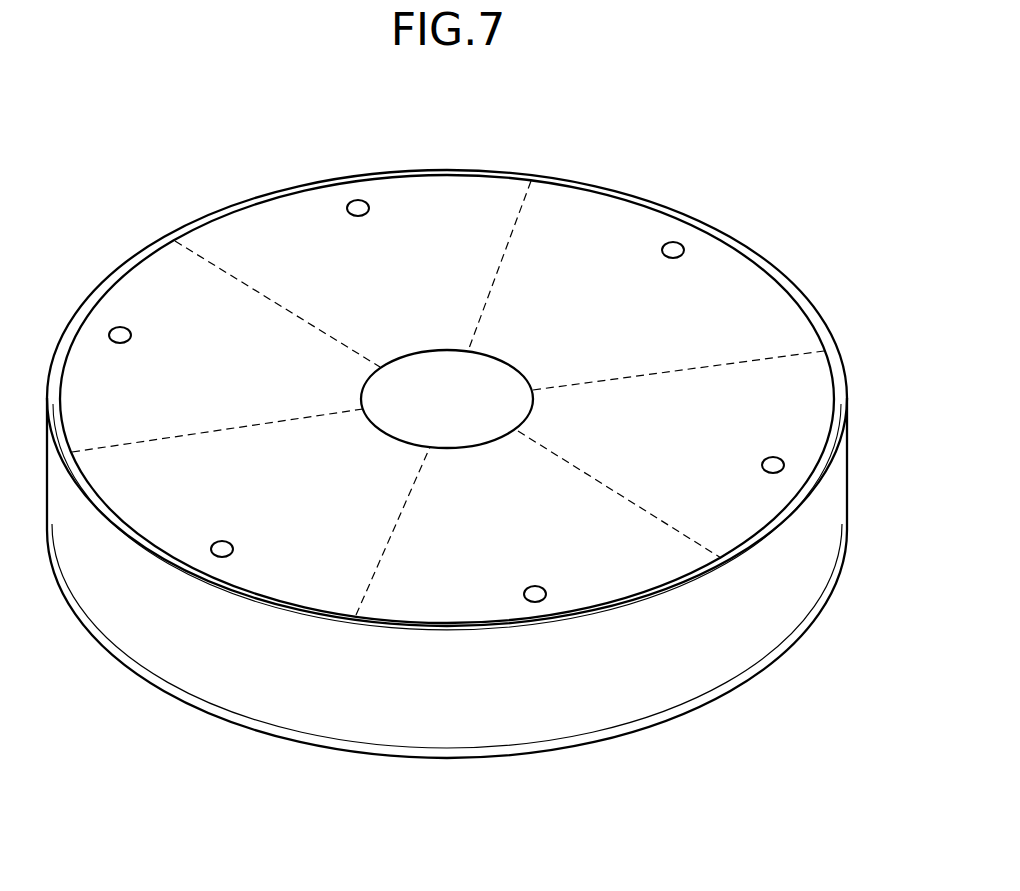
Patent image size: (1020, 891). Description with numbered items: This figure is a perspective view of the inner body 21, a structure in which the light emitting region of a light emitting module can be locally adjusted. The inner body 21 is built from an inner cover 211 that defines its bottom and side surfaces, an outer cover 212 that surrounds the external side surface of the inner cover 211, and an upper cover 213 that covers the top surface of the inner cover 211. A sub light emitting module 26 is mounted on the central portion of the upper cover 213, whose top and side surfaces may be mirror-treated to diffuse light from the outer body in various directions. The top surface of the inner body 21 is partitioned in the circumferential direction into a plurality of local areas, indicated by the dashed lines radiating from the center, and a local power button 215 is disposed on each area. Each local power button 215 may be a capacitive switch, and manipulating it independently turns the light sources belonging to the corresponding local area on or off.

The inner body 21 is at (611, 166).
The sub light emitting module 26 is at (435, 368).
The inner cover 211 is at (633, 732).
The outer cover 212 is at (342, 698).
The upper cover 213 is at (278, 225).
The local power button 215 is at (533, 597).